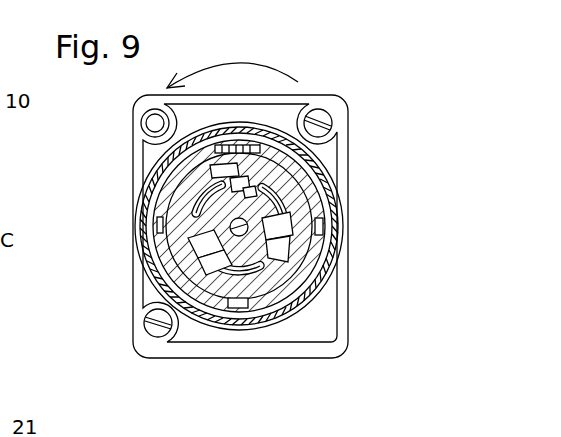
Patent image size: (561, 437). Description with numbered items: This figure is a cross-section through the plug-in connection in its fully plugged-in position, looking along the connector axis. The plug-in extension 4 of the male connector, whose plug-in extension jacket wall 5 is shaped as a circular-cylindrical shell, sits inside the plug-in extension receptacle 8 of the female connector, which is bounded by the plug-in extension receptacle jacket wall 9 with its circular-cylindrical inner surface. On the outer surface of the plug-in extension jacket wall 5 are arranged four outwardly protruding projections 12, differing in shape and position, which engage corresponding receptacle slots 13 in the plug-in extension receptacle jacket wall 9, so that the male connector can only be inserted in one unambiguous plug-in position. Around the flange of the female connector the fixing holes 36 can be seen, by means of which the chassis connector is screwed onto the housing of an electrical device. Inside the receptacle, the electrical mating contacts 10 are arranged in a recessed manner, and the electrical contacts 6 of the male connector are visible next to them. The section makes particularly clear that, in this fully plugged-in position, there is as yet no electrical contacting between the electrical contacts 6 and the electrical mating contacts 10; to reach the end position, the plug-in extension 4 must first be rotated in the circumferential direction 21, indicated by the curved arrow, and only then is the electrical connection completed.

The plug-in extension 4 is at (279, 226).
The plug-in extension jacket wall 5 is at (288, 204).
The electrical contacts 6 is at (247, 177).
The plug-in extension receptacle 8 is at (288, 226).
The plug-in extension receptacle jacket wall 9 is at (288, 200).
The electrical mating contacts 10 is at (203, 198).
The projections 12 is at (235, 221).
The receptacle slots 13 is at (234, 146).
The circumferential direction 21 is at (265, 68).
The fixing holes 36 is at (326, 122).